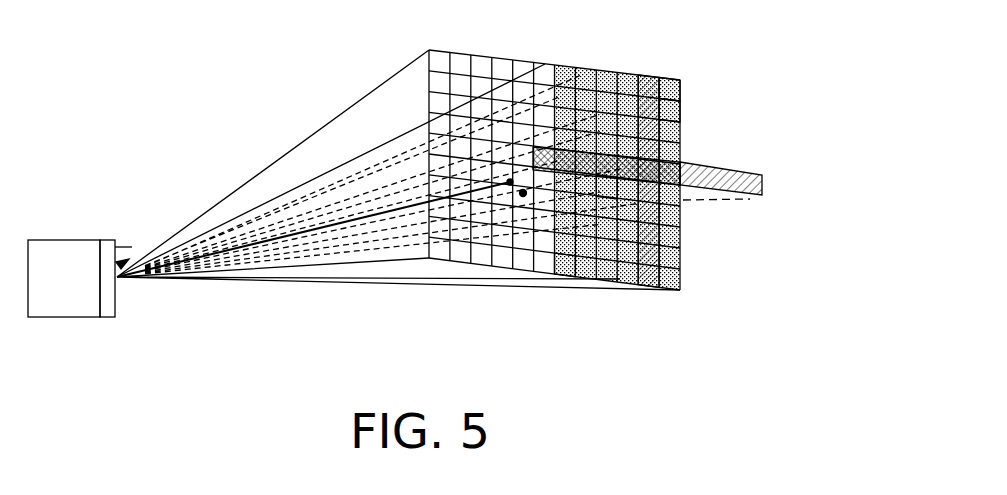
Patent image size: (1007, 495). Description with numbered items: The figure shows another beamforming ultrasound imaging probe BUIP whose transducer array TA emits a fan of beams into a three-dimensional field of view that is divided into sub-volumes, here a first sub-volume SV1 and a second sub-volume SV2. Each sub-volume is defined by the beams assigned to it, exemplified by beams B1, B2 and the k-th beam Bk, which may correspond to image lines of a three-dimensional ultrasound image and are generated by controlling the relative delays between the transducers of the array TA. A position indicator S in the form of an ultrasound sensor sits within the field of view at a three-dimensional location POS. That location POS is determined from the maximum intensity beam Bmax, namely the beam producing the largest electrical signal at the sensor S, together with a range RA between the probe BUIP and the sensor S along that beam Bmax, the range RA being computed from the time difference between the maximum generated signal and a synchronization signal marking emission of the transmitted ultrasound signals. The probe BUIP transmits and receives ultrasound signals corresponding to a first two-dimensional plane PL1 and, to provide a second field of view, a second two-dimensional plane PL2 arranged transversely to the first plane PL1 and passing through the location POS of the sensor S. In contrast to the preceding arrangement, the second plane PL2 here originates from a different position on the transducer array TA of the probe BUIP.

The beamforming ultrasound imaging probe BUIP is at (64, 278).
The transducer array TA is at (107, 307).
The range RA is at (135, 258).
The sub-volume SV2 is at (460, 90).
The sub-volume SV1 is at (563, 98).
The beam B1 is at (672, 95).
The beam B2 is at (672, 117).
The first two-dimensional plane PL1 is at (657, 277).
The second two-dimensional plane PL2 is at (747, 175).
The three-dimensional location POS is at (512, 190).
The position indicator S is at (522, 198).
The beam Bk is at (563, 267).
The maximum intensity beam Bmax is at (604, 190).